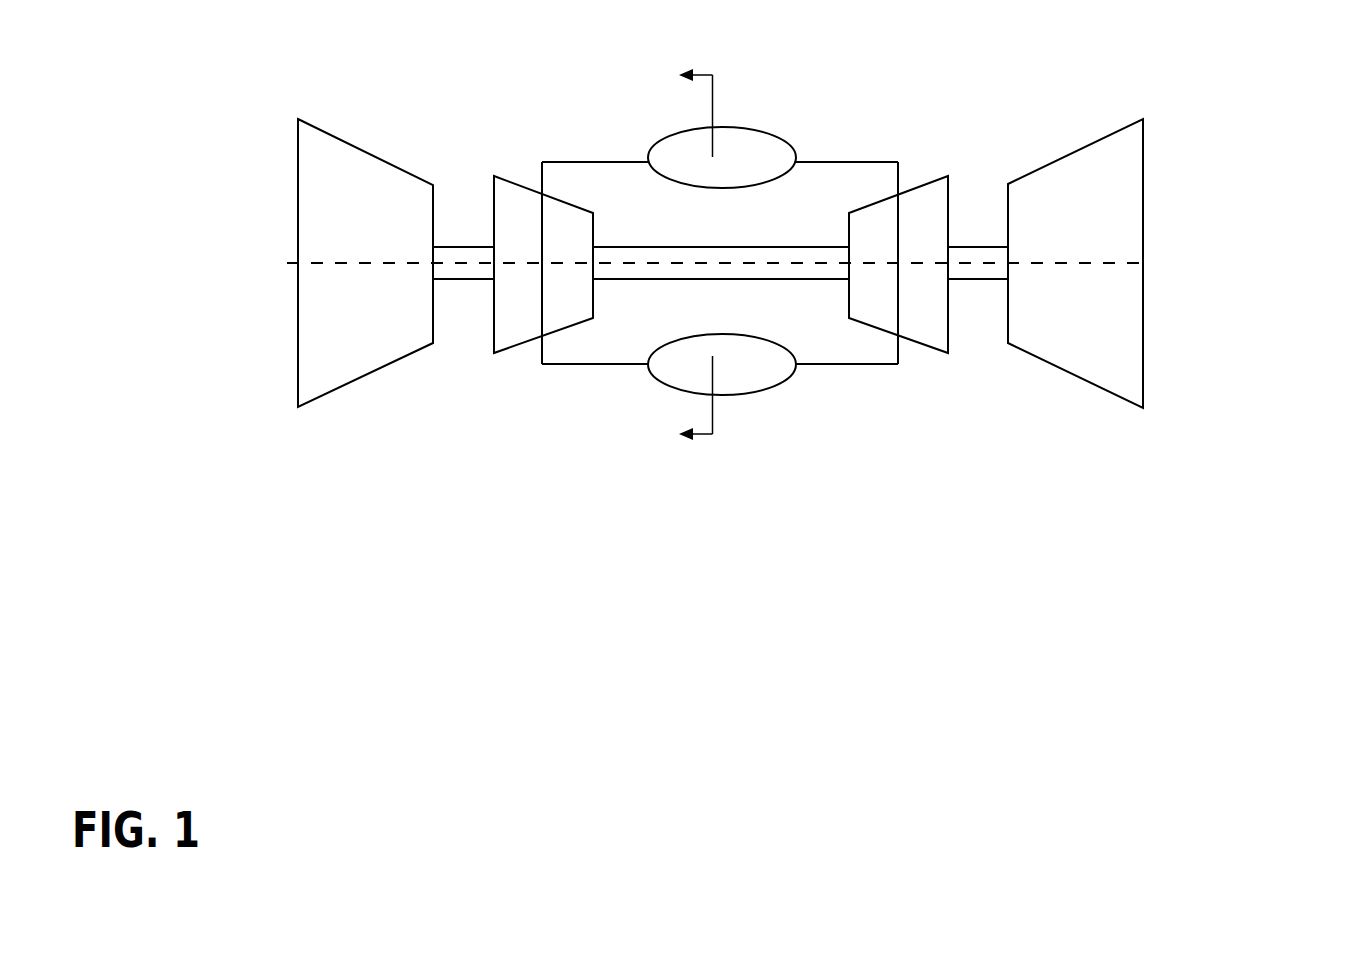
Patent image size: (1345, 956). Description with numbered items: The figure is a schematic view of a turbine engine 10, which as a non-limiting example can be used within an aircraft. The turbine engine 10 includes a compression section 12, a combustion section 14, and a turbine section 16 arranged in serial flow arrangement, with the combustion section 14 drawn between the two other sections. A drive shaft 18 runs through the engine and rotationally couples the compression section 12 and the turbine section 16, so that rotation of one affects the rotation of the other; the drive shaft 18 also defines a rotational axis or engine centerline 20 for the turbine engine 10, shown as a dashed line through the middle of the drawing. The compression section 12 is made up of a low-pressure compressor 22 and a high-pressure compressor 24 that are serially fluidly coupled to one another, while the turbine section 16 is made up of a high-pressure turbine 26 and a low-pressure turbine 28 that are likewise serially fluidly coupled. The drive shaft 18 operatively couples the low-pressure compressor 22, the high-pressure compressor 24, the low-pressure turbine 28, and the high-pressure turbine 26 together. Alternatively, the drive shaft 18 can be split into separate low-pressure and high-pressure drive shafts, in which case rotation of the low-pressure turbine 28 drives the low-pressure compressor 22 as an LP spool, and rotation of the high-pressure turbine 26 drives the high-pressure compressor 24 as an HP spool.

The turbine engine 10 is at (1293, 145).
The compression section 12 is at (445, 221).
The combustion section 14 is at (681, 390).
The turbine section 16 is at (1024, 215).
The drive shaft 18 is at (719, 247).
The engine centerline 20 is at (1150, 263).
The low-pressure compressor 22 is at (367, 152).
The high-pressure compressor 24 is at (494, 212).
The high-pressure turbine 26 is at (948, 213).
The low-pressure turbine 28 is at (1143, 166).